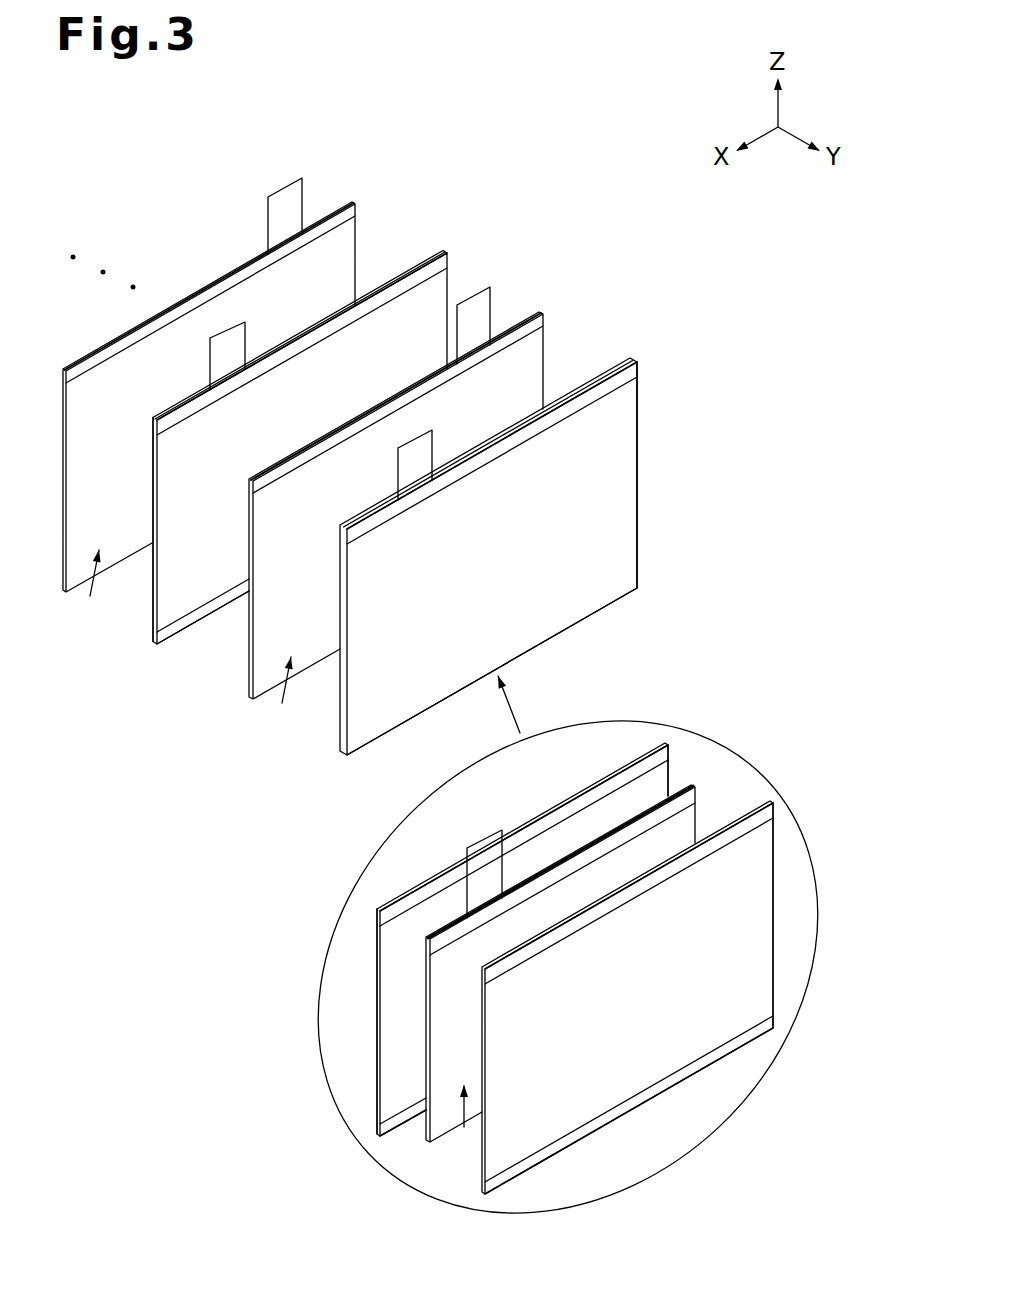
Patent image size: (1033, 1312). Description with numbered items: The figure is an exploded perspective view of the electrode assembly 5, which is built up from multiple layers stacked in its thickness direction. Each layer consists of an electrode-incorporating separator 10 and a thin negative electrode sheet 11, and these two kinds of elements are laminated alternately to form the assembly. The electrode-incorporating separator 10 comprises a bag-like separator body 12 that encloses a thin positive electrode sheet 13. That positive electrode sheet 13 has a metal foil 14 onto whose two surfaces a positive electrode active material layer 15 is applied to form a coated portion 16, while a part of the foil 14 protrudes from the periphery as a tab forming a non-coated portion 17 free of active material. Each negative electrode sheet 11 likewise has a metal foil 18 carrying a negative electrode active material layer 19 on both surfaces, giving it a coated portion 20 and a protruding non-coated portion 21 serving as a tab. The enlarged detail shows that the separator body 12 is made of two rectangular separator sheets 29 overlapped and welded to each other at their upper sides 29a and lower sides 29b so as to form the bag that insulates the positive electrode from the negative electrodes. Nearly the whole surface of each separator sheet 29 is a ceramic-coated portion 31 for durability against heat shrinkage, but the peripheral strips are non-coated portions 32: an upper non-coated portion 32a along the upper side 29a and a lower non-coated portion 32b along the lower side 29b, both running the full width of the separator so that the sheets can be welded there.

The electrode assembly 5 is at (594, 132).
The electrode-incorporating separator 10 is at (438, 249).
The negative electrode sheet 11 is at (350, 199).
The separator body 12 is at (622, 414).
The positive electrode sheet 13 is at (699, 801).
The foil 14 is at (691, 791).
The positive electrode active material layer 15 is at (689, 826).
The coated portion 16 is at (469, 1122).
The non-coated portion 17 is at (241, 338).
The foil 18 is at (217, 287).
The negative electrode active material layer 19 is at (340, 253).
The coated portion 20 is at (188, 643).
The non-coated portion 21 is at (298, 193).
The separator sheet 29 is at (167, 645).
The upper side 29a is at (632, 765).
The lower side 29b is at (746, 1047).
The ceramic-coated portion 31 is at (622, 536).
The non-coated portion 32 is at (576, 974).
The upper non-coated portion 32a is at (615, 903).
The lower non-coated portion 32b is at (396, 1125).